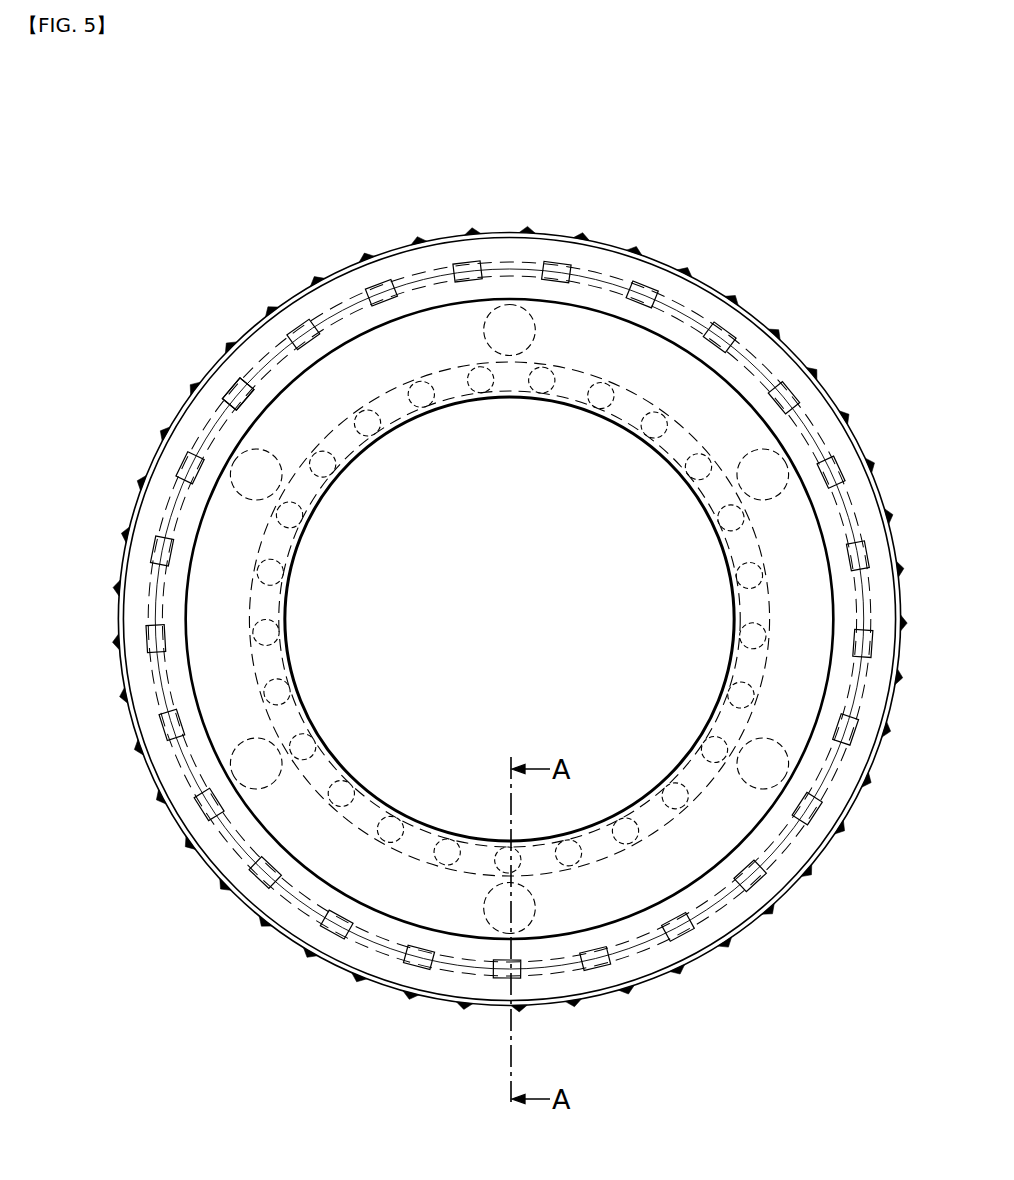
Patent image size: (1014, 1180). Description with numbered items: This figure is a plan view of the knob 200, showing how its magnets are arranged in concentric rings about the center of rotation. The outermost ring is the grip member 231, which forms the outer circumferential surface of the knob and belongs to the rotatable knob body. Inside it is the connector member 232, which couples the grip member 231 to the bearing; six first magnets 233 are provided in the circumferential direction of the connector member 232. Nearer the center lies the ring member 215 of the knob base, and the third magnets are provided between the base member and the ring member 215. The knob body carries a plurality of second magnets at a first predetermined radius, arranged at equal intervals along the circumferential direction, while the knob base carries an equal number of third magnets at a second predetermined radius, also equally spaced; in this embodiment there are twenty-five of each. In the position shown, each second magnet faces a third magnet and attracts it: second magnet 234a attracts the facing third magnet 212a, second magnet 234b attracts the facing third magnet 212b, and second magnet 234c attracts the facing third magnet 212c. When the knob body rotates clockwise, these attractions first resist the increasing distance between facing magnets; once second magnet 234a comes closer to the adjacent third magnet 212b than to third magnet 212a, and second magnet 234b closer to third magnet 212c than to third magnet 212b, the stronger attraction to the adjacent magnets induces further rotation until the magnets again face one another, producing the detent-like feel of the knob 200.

The knob 200 is at (352, 128).
The grip member 231 is at (207, 507).
The connector member 232 is at (248, 600).
The first magnets 233 is at (503, 328).
The second magnet 234a is at (232, 392).
The second magnet 234b is at (295, 328).
The second magnet 234c is at (377, 288).
The third magnet 212a is at (333, 472).
The third magnet 212b is at (378, 427).
The third magnet 212c is at (423, 405).
The ring member 215 is at (288, 640).